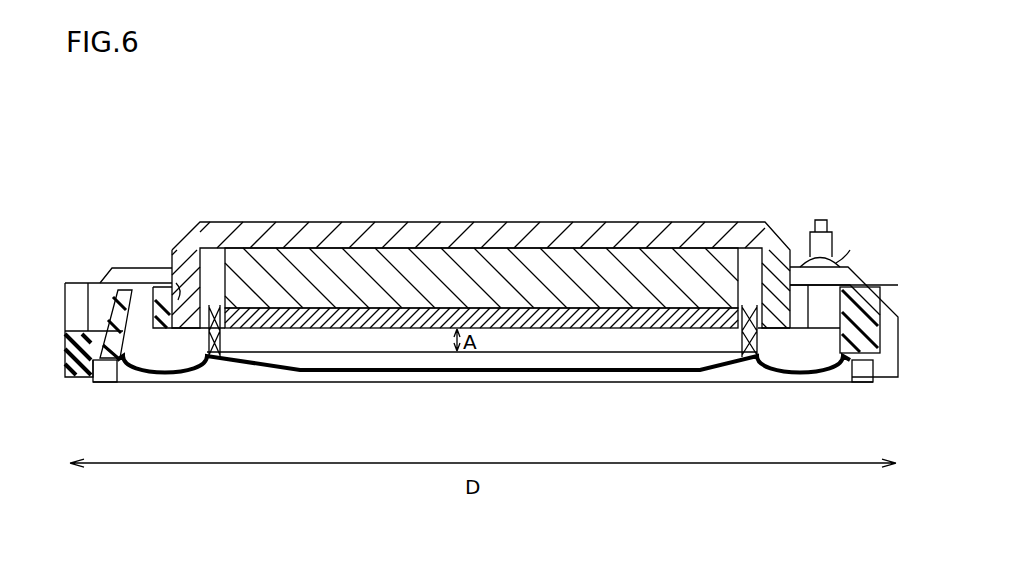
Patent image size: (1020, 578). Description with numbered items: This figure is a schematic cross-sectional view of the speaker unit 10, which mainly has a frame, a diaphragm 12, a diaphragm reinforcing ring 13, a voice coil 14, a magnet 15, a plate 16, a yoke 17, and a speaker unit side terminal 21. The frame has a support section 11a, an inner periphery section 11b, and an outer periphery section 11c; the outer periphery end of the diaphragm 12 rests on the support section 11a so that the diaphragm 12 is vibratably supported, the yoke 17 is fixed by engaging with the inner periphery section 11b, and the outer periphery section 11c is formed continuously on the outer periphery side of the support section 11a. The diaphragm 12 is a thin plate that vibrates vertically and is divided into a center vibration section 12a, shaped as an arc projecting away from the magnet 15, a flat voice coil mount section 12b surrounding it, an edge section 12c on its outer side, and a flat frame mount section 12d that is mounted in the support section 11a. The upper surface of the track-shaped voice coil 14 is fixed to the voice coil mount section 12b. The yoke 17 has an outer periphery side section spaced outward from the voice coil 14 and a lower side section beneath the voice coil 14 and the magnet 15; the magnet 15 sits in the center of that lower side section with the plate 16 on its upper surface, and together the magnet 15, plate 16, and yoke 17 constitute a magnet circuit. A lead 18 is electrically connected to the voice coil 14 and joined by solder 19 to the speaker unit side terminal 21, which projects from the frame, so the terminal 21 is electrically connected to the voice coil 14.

The speaker unit 10 is at (806, 142).
The support section 11a is at (103, 357).
The inner periphery section 11b is at (183, 290).
The outer periphery section 11c is at (80, 347).
The diaphragm 12 is at (547, 372).
The center vibration section 12a is at (380, 382).
The voice coil mount section 12b is at (213, 350).
The edge section 12c is at (153, 374).
The frame mount section 12d is at (115, 364).
The diaphragm reinforcing ring 13 is at (863, 380).
The voice coil 14 is at (750, 312).
The magnet 15 is at (395, 277).
The plate 16 is at (443, 318).
The yoke 17 is at (495, 234).
The lead 18 is at (858, 270).
The solder 19 is at (836, 263).
The speaker unit side terminal 21 is at (822, 218).